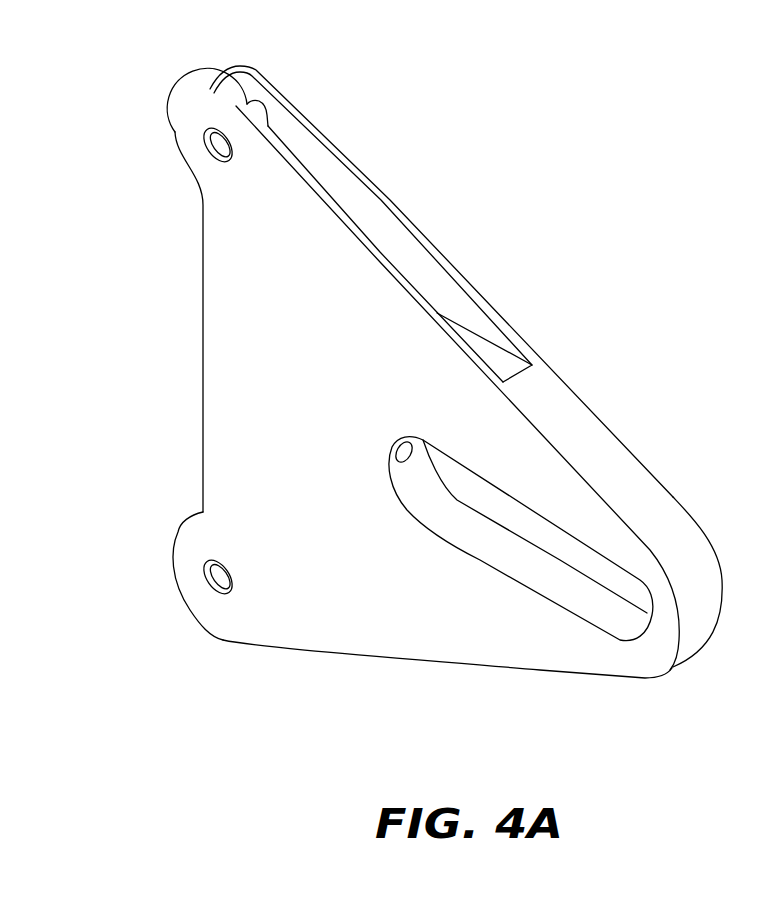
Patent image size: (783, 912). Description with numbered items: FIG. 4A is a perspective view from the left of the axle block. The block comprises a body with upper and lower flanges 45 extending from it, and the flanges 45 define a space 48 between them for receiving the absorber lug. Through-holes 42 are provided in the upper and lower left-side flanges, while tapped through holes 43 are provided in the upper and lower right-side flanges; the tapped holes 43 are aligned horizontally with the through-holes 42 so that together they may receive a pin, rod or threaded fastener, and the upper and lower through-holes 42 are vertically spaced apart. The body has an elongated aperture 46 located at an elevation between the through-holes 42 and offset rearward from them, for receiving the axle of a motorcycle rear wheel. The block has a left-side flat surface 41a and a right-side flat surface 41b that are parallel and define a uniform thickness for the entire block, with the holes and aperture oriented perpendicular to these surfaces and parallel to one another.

The left-side flat surface 41a is at (238, 345).
The right-side flat surface 41b is at (648, 475).
The through-holes 42 is at (206, 147).
The tapped through holes 43 is at (256, 107).
The flanges 45 is at (183, 110).
The elongated aperture 46 is at (483, 560).
The space 48 is at (220, 83).